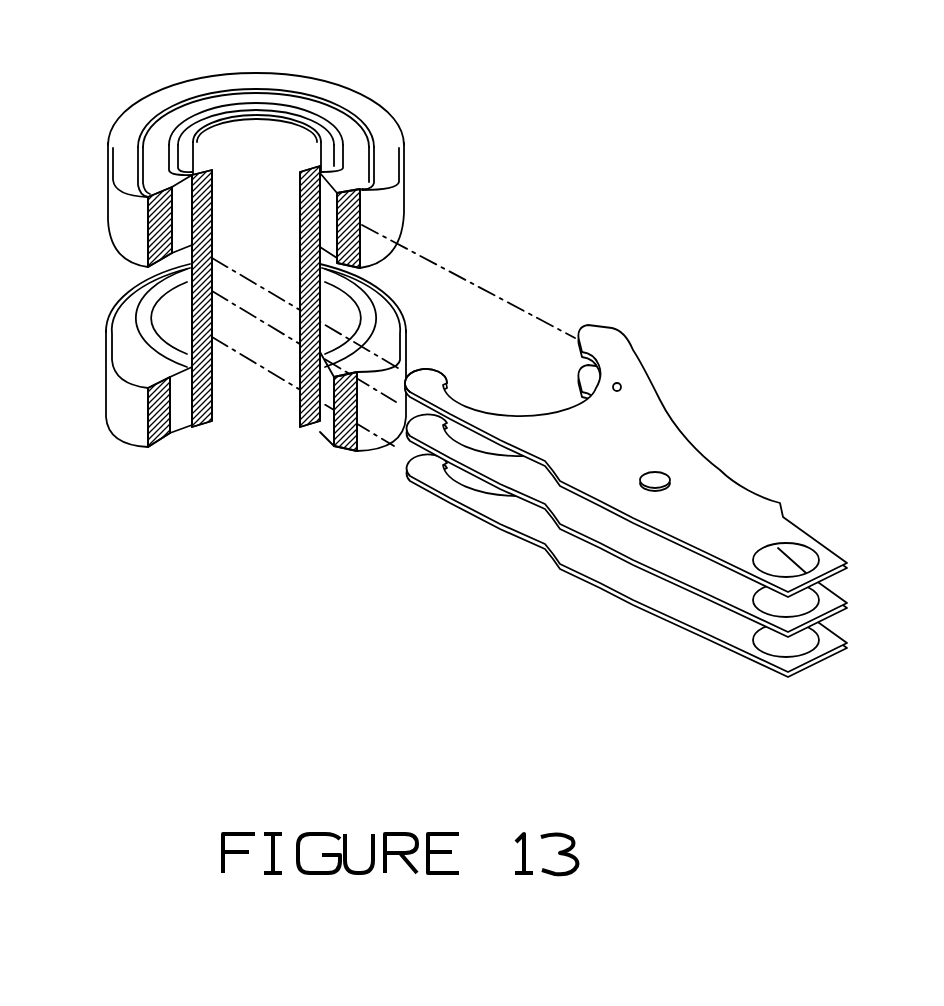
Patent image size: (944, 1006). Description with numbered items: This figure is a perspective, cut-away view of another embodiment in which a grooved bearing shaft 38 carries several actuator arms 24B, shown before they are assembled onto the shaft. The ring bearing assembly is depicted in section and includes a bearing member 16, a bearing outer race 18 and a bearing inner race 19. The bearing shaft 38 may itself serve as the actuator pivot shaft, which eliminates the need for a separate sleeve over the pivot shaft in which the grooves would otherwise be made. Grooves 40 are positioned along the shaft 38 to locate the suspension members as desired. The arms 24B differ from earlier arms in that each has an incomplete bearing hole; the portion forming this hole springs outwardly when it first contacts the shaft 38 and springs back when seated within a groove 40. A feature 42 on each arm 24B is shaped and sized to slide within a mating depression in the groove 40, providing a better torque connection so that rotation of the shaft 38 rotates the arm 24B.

The bearing member 16 is at (392, 208).
The bearing outer race 18 is at (389, 135).
The bearing inner race 19 is at (322, 130).
The grooved bearing shaft 38 is at (145, 270).
The grooves 40 is at (350, 282).
The feature 42 is at (431, 380).
The arms 24B is at (657, 422).